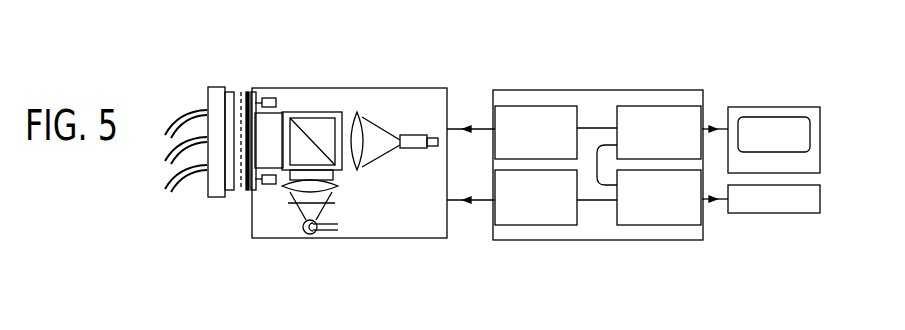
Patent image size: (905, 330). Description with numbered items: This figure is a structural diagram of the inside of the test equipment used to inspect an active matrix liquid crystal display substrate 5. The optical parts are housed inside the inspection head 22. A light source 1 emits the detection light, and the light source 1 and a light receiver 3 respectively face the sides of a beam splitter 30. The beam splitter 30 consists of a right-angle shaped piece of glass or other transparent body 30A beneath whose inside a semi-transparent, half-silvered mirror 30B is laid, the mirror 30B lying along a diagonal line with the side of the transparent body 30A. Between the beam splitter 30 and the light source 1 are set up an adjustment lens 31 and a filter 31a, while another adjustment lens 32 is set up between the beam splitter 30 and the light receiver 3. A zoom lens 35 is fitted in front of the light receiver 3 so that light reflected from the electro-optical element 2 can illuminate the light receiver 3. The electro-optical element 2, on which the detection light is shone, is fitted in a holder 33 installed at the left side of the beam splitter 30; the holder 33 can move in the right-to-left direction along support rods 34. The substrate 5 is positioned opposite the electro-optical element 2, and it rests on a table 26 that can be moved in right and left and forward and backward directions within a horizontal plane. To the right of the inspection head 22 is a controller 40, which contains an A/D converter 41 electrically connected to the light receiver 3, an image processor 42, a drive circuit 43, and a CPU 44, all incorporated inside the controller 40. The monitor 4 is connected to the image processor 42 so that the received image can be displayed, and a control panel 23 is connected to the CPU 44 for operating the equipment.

The light source 1 is at (302, 240).
The electro-optical element 2 is at (240, 95).
The light receiver 3 is at (432, 137).
The monitor 4 is at (818, 153).
The active matrix liquid crystal display substrate 5 is at (234, 193).
The inspection head 22 is at (398, 247).
The control panel 23 is at (782, 213).
The table 26 is at (210, 188).
The beam splitter 30 is at (344, 88).
The transparent body 30A is at (320, 138).
The semi-transparent mirror 30B is at (322, 112).
The adjustment lens 31 is at (337, 192).
The filter 31a is at (292, 203).
The adjustment lens 32 is at (361, 169).
The holder 33 is at (247, 193).
The support rods 34 is at (261, 98).
The zoom lens 35 is at (409, 134).
The controller 40 is at (598, 152).
The A/D converter 41 is at (528, 123).
The image processor 42 is at (660, 123).
The drive circuit 43 is at (522, 218).
The CPU 44 is at (643, 220).